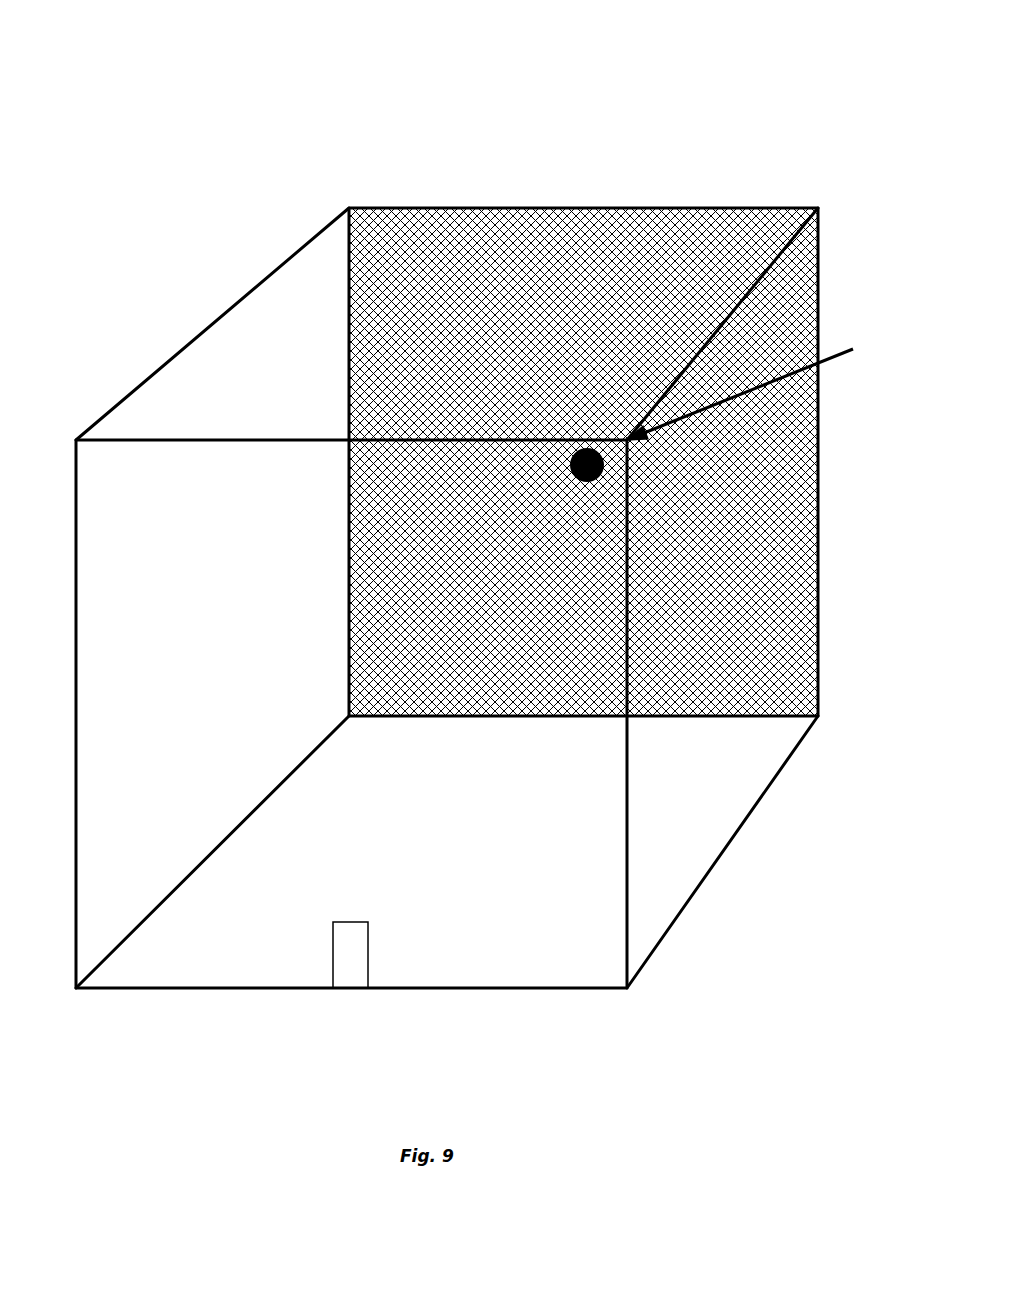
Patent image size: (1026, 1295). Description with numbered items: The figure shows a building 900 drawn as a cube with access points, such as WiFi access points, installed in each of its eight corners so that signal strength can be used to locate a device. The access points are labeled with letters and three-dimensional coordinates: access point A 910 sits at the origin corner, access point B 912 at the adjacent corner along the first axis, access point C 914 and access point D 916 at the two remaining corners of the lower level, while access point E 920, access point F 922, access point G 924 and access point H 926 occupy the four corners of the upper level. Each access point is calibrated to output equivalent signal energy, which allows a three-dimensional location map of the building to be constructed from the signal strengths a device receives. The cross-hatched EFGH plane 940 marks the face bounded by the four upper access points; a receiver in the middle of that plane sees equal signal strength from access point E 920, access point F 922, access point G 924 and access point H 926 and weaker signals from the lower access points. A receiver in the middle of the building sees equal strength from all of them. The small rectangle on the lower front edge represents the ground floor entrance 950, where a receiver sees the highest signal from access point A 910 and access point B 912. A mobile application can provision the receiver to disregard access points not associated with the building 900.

The building 900 is at (196, 92).
The access point A 910 is at (103, 1008).
The access point B 912 is at (594, 482).
The access point C 914 is at (42, 387).
The access point D 916 is at (870, 338).
The access point E 920 is at (288, 680).
The access point F 922 is at (868, 668).
The access point G 924 is at (370, 150).
The access point H 926 is at (842, 142).
The EFGH plane 940 is at (567, 330).
The ground floor entrance 950 is at (352, 990).